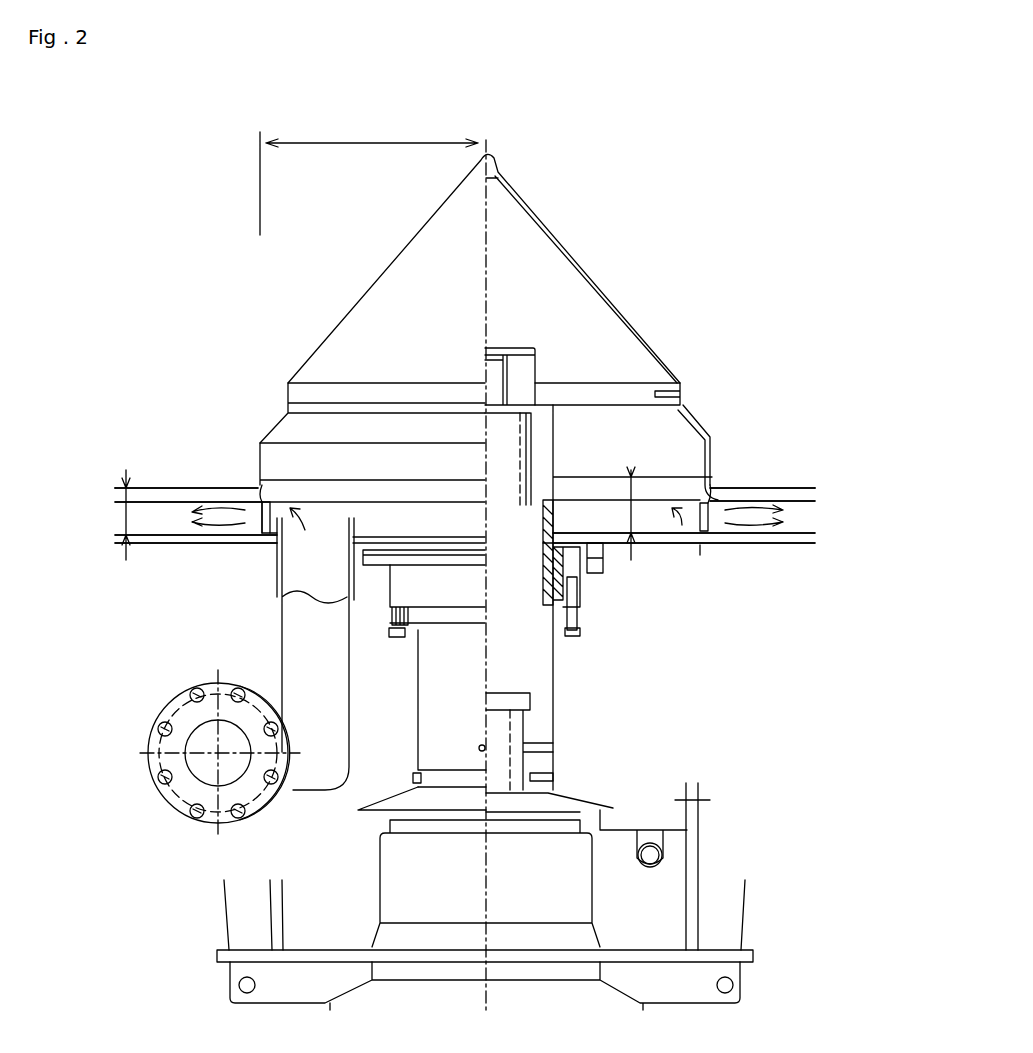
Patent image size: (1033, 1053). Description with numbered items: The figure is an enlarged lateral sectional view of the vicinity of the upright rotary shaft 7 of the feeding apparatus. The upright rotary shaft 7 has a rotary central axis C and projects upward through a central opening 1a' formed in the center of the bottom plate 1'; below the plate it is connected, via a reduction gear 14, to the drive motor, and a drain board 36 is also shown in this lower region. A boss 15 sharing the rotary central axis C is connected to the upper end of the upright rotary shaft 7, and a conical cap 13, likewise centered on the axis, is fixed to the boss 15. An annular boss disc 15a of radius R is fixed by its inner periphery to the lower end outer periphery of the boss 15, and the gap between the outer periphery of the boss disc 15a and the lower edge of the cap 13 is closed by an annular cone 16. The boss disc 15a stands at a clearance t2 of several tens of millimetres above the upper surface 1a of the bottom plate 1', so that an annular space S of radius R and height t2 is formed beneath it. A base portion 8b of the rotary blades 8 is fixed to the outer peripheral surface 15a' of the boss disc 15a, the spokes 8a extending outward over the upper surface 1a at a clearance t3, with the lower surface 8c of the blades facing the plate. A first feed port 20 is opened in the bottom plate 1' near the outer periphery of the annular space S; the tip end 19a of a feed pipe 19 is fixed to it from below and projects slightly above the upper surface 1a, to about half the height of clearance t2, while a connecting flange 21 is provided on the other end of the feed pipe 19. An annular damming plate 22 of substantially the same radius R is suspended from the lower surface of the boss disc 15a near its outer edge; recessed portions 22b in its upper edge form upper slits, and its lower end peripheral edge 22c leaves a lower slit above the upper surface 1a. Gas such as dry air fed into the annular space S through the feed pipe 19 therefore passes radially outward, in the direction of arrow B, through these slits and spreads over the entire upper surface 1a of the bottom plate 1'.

The upper surface of the bottom plate 1a is at (470, 542).
The central opening 1a' is at (558, 605).
The bottom plate 1' is at (703, 582).
The upright rotary shaft 7 is at (420, 512).
The rotary blades 8 is at (171, 477).
The spokes 8a is at (205, 480).
The base portion of the rotary blades 8b is at (257, 497).
The lower surface of the rotary blades 8c is at (151, 500).
The conical cap 13 is at (393, 270).
The reduction gear 14 is at (395, 882).
The boss 15 is at (542, 455).
The annular boss disc 15a is at (469, 467).
The outer peripheral surface of the boss disc 15a' is at (485, 436).
The annular cone 16 is at (280, 412).
The feed pipe 19 is at (284, 642).
The tip end of the feed pipe 19a is at (365, 515).
The first feed port 20 is at (353, 538).
The connecting flange 21 is at (176, 695).
The annular damming plate 22 is at (264, 522).
The recessed portions 22b is at (270, 500).
The lower end peripheral edge of the annular damming plate 22c is at (273, 566).
The drain board 36 is at (392, 797).
The radial gas flow direction B is at (205, 525).
The annular space S is at (377, 527).
The rotary central axis C is at (490, 272).
The radius R is at (369, 173).
The clearance t2 is at (644, 539).
The clearance t3 is at (110, 542).